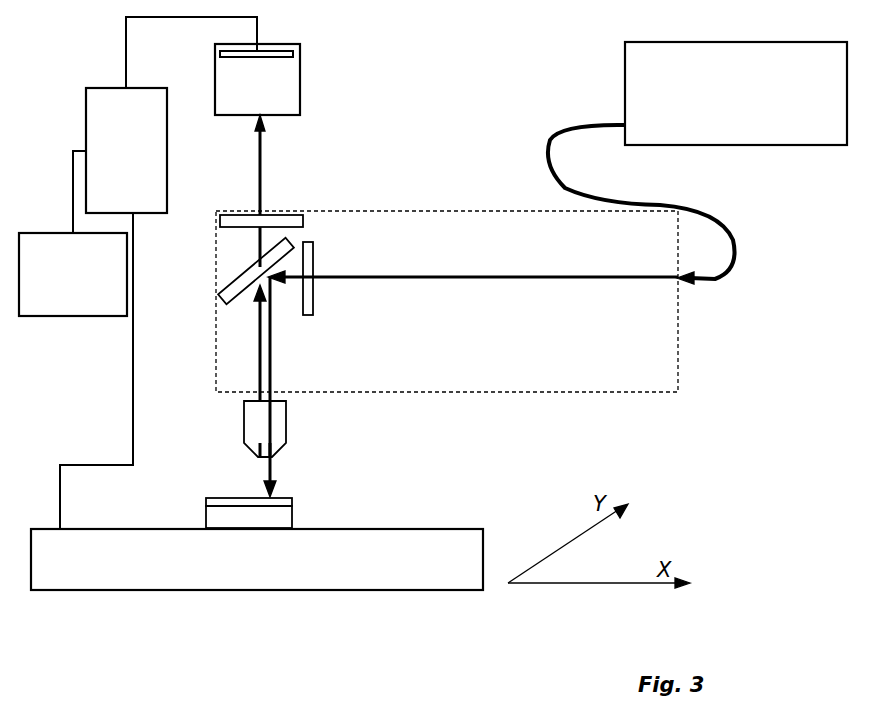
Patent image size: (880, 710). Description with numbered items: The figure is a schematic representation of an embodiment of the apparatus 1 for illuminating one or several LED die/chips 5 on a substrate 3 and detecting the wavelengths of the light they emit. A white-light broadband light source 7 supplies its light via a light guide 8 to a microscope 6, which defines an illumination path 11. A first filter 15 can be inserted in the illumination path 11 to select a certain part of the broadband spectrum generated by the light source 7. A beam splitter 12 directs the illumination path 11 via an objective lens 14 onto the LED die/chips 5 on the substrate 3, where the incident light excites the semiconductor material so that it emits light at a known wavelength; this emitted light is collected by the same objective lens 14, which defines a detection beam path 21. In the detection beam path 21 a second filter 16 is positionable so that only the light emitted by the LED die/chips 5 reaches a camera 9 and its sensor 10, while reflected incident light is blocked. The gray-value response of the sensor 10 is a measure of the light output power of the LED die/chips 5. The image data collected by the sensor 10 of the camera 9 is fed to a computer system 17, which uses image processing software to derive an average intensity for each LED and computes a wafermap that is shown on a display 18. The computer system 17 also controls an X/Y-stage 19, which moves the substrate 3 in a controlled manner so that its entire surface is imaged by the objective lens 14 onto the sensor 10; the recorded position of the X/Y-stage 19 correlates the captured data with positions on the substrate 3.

The apparatus 1 is at (463, 118).
The substrate 3 is at (218, 514).
The LED die/chips 5 is at (216, 500).
The microscope 6 is at (531, 365).
The light source 7 is at (738, 104).
The light guide 8 is at (548, 151).
The camera 9 is at (302, 104).
The sensor 10 is at (282, 54).
The illumination path 11 is at (402, 284).
The beam splitter 12 is at (243, 288).
The objective lens 14 is at (275, 423).
The first filter 15 is at (313, 258).
The second filter 16 is at (238, 222).
The computer system 17 is at (142, 164).
The display 18 is at (88, 286).
The X/Y-stage 19 is at (411, 573).
The detection beam path 21 is at (262, 182).